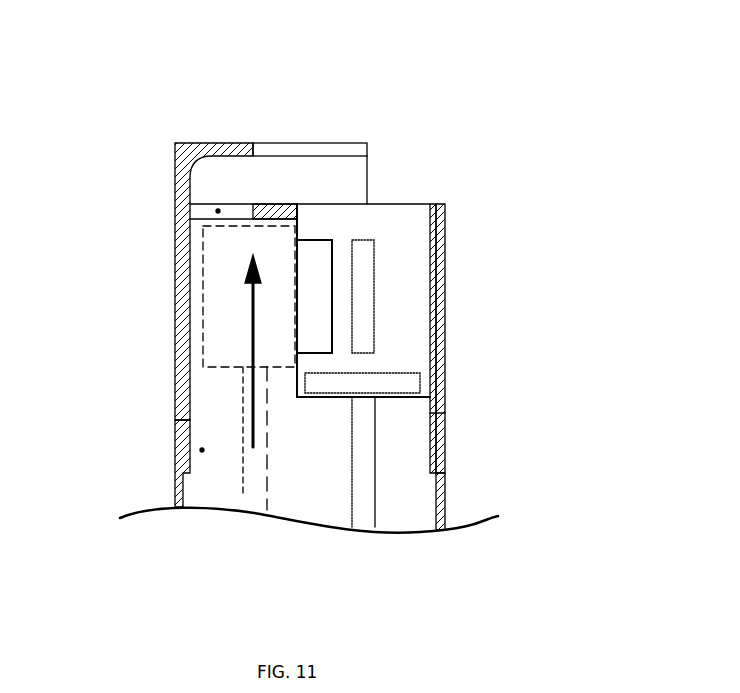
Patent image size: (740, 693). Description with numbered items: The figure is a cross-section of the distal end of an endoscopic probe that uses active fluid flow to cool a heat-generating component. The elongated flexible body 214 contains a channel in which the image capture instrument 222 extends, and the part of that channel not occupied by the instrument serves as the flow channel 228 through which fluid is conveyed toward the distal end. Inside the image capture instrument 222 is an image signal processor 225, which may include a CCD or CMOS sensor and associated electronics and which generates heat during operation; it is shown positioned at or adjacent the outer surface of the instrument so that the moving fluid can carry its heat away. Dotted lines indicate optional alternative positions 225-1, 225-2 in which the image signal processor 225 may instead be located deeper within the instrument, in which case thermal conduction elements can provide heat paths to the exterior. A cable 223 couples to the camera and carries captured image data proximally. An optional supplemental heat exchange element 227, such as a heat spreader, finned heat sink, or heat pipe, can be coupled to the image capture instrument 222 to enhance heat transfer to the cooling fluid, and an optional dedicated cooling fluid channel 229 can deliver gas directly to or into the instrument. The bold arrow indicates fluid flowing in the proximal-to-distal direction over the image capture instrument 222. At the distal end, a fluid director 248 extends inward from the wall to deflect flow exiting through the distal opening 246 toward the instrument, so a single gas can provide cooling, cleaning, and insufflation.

The fluid director 248 is at (228, 142).
The distal opening 246 is at (216, 211).
The image capture instrument 222 is at (442, 224).
The flexible body 214 is at (445, 493).
The image signal processor 225 is at (332, 289).
The alternative position 225-1 is at (374, 325).
The alternative position 225-2 is at (420, 382).
The cable 223 is at (375, 455).
The supplemental heat exchange element 227 is at (203, 298).
The dedicated cooling fluid channel 229 is at (243, 410).
The flow channel 228 is at (200, 450).